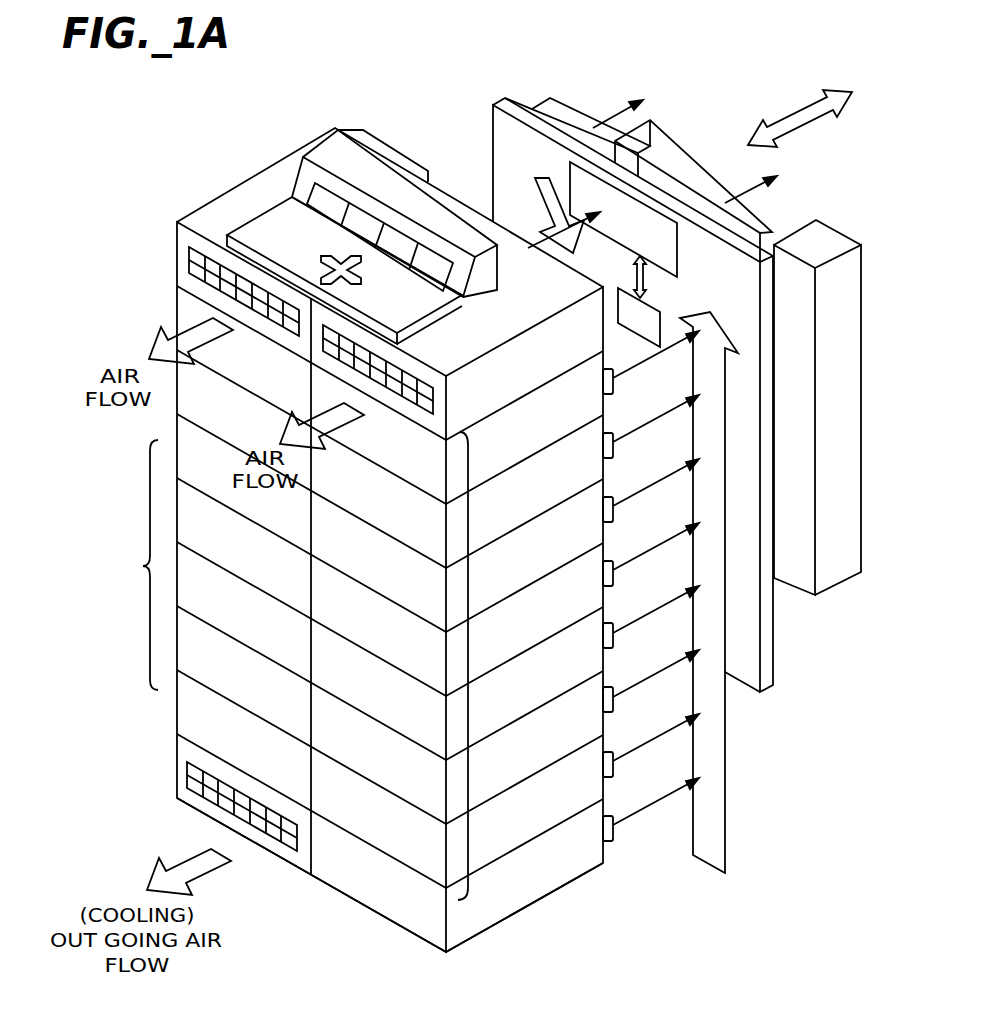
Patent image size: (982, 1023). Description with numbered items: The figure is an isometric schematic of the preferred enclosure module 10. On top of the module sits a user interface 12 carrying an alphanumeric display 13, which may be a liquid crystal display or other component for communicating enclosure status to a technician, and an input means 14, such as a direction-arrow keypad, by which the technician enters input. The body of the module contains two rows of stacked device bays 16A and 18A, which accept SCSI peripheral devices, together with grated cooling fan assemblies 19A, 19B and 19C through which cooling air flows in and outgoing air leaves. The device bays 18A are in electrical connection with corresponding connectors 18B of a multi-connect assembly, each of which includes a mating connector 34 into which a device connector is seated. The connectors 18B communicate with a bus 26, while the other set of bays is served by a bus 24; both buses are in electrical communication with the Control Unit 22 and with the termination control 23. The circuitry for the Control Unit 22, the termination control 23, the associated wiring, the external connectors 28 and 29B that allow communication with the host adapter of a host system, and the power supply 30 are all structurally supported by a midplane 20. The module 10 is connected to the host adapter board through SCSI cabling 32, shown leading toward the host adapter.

The enclosure module 10 is at (292, 109).
The user interface 12 is at (245, 221).
The alphanumeric display 13 is at (315, 200).
The input means 14 is at (325, 257).
The device bays 16A is at (128, 565).
The device bays 18A is at (470, 645).
The connectors 18B is at (613, 568).
The grated cooling fan assembly 19A is at (192, 262).
The grated cooling fan assembly 19B is at (412, 378).
The grated cooling fan assembly 19C is at (190, 779).
The midplane 20 is at (770, 660).
The Control Unit 22 is at (567, 172).
The termination control 23 is at (703, 290).
The bus 24 is at (525, 212).
The bus 26 is at (728, 757).
The external connector 28 is at (560, 113).
The external connector 29B is at (718, 195).
The power supply 30 is at (827, 572).
The SCSI cabling 32 is at (792, 100).
The mating connector 34 is at (667, 1016).